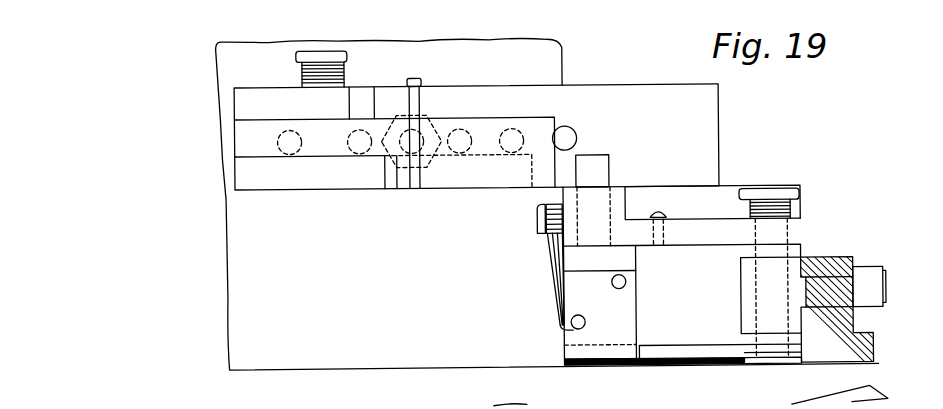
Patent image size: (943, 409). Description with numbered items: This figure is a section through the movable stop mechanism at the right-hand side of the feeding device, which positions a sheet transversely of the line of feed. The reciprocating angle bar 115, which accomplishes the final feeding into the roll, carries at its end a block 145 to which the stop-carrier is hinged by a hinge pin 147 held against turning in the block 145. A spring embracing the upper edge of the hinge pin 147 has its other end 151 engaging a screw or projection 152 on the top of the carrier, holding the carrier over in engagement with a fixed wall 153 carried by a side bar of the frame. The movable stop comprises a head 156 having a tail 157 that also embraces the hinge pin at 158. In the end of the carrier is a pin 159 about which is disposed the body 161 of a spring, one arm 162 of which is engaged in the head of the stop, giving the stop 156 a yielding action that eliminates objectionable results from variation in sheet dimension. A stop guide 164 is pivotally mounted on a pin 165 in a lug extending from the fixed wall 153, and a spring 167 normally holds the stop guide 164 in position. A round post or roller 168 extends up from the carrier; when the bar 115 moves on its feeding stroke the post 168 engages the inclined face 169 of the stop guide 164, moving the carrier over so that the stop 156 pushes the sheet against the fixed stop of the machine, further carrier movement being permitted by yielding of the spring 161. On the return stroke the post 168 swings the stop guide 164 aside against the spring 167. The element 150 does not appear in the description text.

The angle bar 115 is at (852, 263).
The block 145 is at (775, 276).
The hinge pin 147 is at (777, 195).
The machine bed 150 is at (262, 220).
The spring end 151 is at (710, 216).
The screw or projection 152 is at (662, 207).
The fixed wall 153 is at (613, 97).
The movable stop head 156 is at (615, 304).
The tail 157 is at (717, 352).
The hinge pin embracing portion 158 is at (777, 340).
The pin 159 is at (543, 221).
The spring body 161 is at (548, 240).
The spring arm 162 is at (560, 318).
The stop guide 164 is at (437, 120).
The pin 165 is at (327, 57).
The spring 167 is at (377, 84).
The round post or roller 168 is at (598, 165).
The inclined face 169 is at (492, 170).